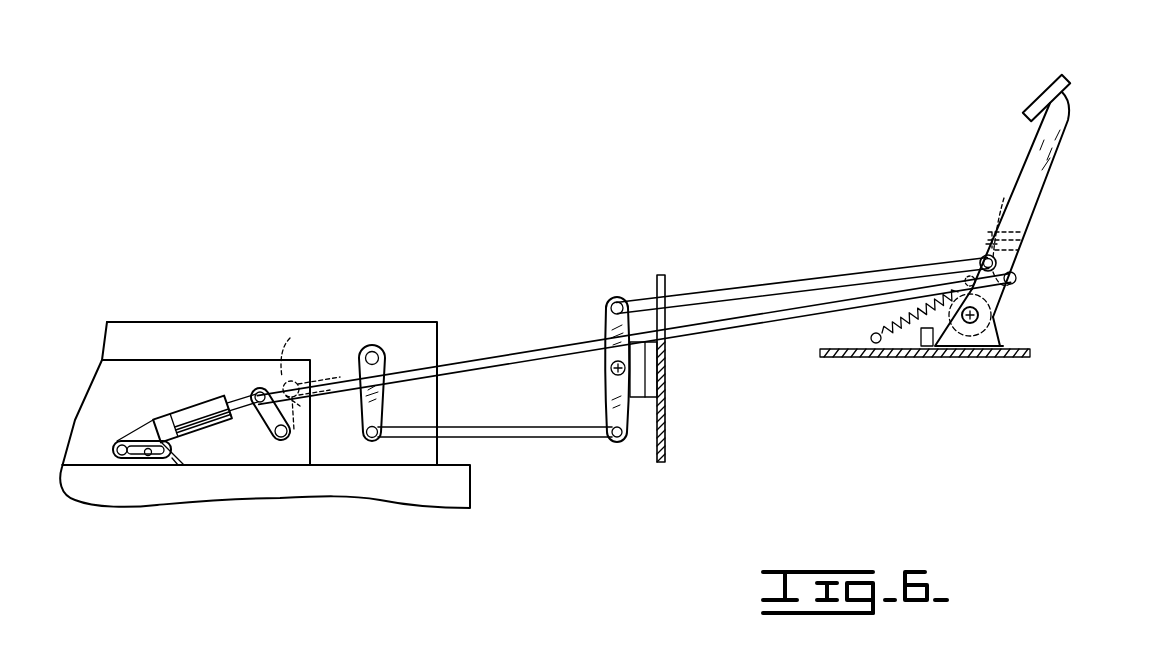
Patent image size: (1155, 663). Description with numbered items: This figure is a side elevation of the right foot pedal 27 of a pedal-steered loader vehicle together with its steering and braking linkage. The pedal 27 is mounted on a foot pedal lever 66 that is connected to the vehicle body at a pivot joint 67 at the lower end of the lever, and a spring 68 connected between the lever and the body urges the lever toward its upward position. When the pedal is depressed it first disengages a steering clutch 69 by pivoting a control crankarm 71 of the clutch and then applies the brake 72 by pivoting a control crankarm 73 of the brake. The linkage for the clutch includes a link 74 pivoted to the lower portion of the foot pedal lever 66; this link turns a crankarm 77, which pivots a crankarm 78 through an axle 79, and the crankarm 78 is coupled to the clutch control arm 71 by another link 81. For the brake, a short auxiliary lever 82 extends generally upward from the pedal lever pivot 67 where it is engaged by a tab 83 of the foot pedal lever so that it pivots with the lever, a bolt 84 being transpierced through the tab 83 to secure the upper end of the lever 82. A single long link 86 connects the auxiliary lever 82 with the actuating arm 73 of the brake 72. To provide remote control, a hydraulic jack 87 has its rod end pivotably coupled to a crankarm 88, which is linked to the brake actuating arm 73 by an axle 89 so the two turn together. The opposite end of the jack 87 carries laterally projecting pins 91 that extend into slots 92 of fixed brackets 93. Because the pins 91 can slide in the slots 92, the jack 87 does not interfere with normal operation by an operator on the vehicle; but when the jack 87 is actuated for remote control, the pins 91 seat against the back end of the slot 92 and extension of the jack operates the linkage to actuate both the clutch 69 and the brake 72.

The right foot pedal 27 is at (1070, 80).
The foot pedal lever 66 is at (1043, 168).
The pivot joint 67 is at (986, 313).
The spring 68 is at (910, 346).
The steering clutch 69 is at (392, 328).
The control crankarm 71 is at (380, 400).
The brake 72 is at (128, 367).
The control crankarm 73 is at (310, 376).
The link 74 is at (722, 296).
The crankarm 77 is at (607, 325).
The crankarm 78 is at (606, 421).
The axle 79 is at (611, 369).
The link 81 is at (505, 430).
The auxiliary lever 82 is at (1020, 261).
The tab 83 is at (1008, 206).
The bolt 84 is at (990, 238).
The long link 86 is at (489, 357).
The hydraulic jack 87 is at (172, 422).
The crankarm 88 is at (268, 421).
The axle 89 is at (290, 432).
The pins 91 is at (124, 444).
The slots 92 is at (150, 456).
The fixed brackets 93 is at (107, 460).